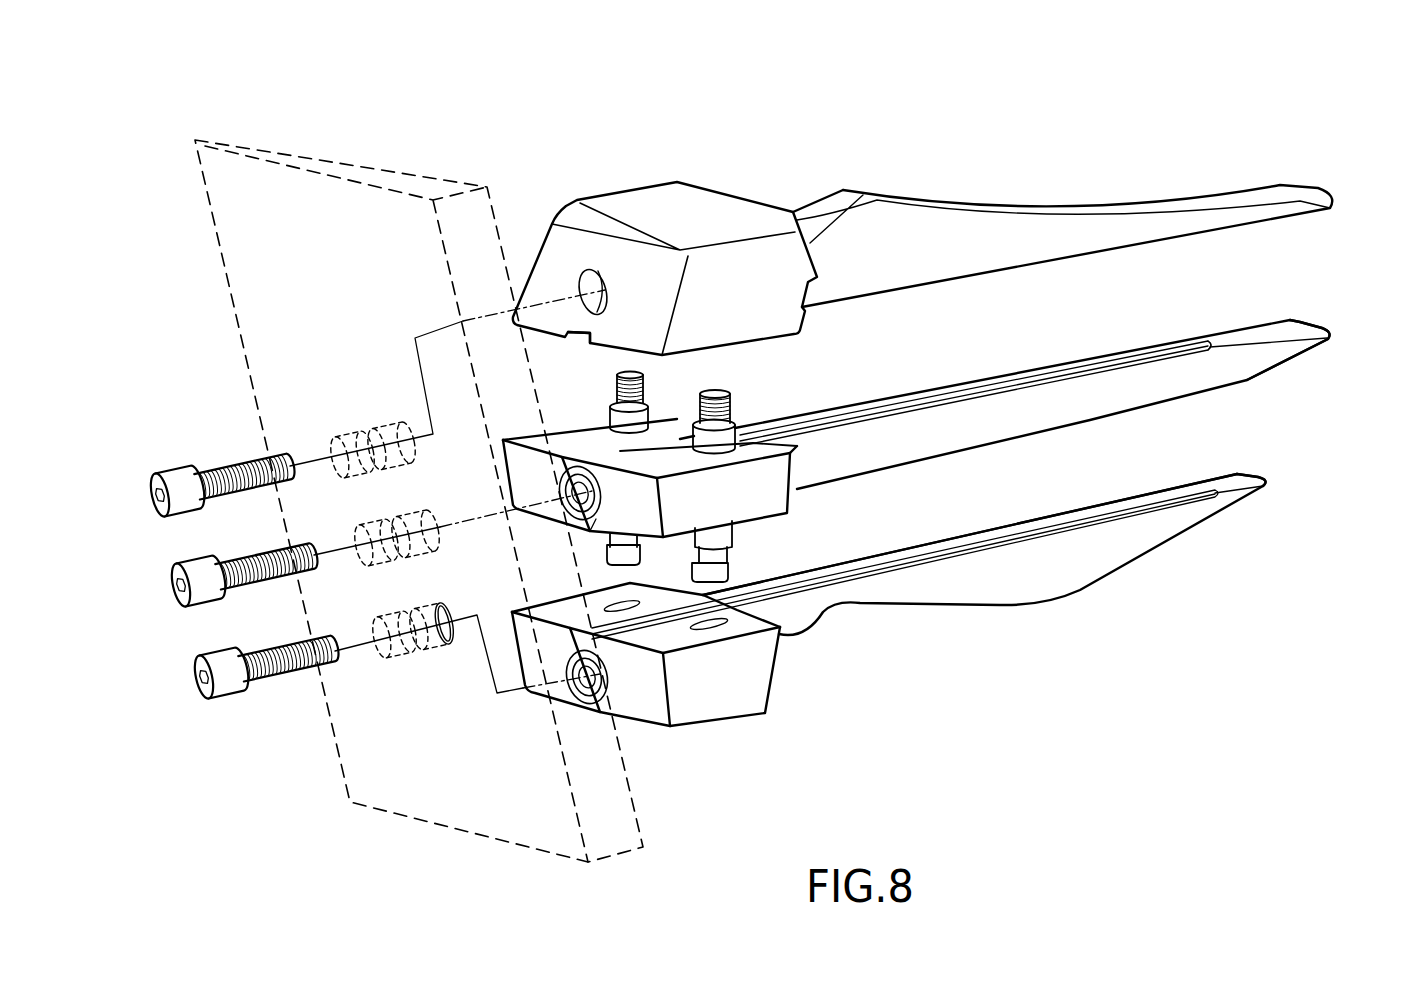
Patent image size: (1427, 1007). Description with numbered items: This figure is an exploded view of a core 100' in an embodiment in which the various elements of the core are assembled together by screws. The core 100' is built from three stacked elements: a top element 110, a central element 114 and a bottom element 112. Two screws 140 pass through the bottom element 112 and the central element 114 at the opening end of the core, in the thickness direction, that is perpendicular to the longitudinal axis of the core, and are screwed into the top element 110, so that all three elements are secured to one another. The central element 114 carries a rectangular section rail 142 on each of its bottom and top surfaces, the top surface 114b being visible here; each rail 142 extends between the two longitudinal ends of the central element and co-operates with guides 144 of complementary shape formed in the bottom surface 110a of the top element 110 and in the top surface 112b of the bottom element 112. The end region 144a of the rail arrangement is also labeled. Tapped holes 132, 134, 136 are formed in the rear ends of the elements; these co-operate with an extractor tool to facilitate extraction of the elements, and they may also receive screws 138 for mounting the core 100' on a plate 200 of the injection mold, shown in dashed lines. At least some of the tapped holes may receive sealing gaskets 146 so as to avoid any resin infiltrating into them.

The core 100' is at (763, 386).
The top element 110 is at (945, 397).
The bottom surface of top element 110a is at (1049, 265).
The bottom element 112 is at (1037, 534).
The top surface of bottom element 112b is at (1223, 480).
The central element 114 is at (980, 425).
The top surface of central element 114b is at (1247, 337).
The tapped hole 132 is at (588, 498).
The tapped hole 134 is at (600, 292).
The tapped hole 136 is at (646, 661).
The screws 138 is at (152, 506).
The screws 140 is at (683, 385).
The rail 142 is at (842, 412).
The guides 144 is at (577, 340).
The groove end 144a is at (1223, 390).
The sealing gaskets 146 is at (597, 680).
The plate 200 is at (215, 248).